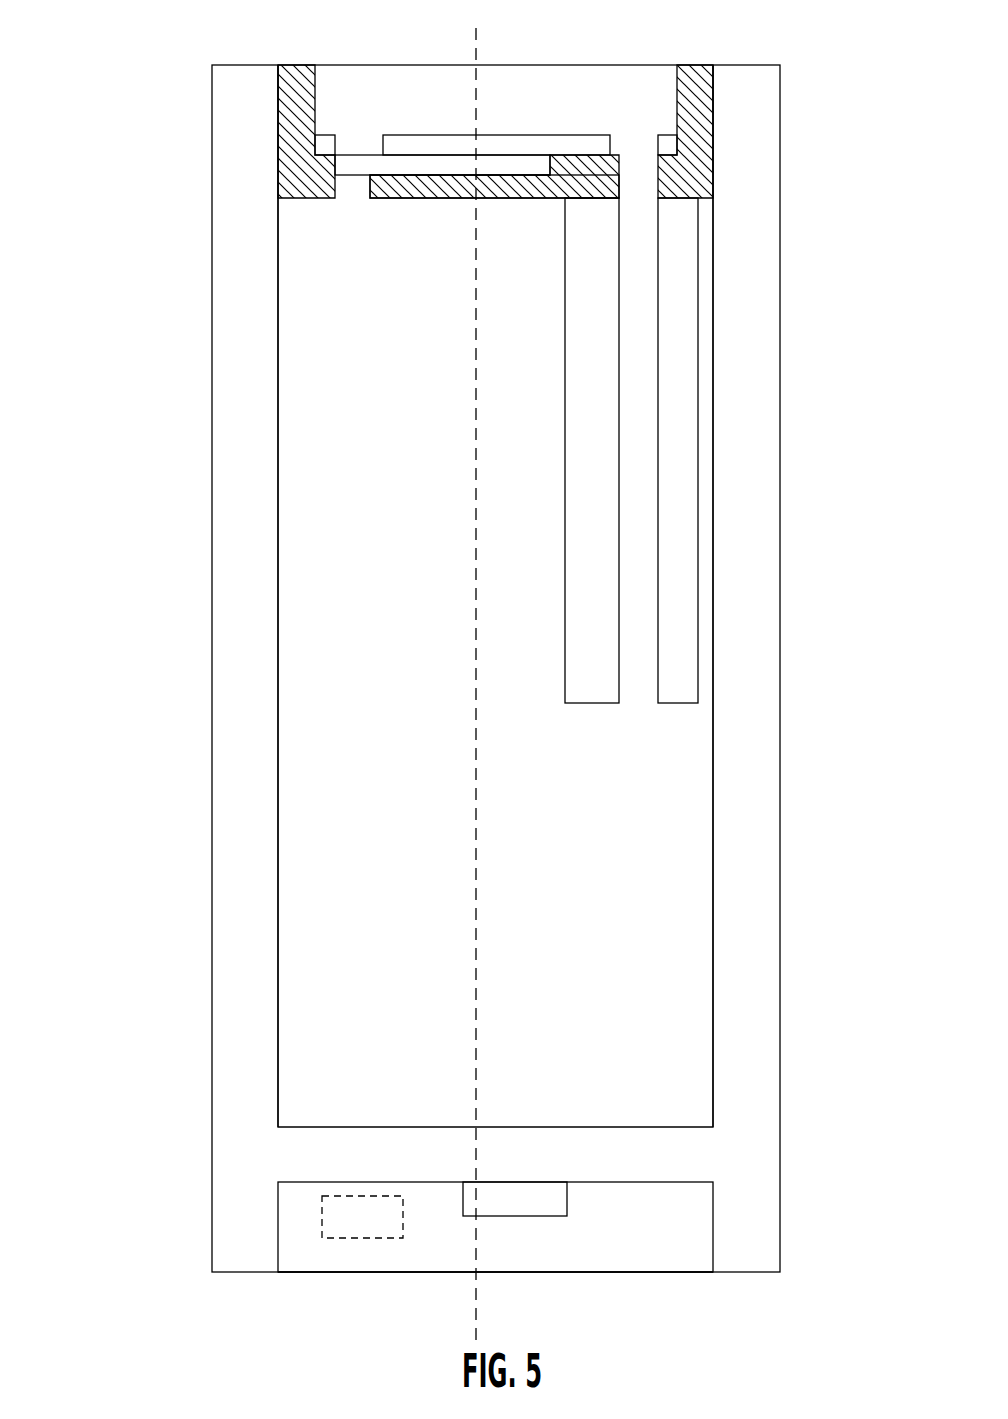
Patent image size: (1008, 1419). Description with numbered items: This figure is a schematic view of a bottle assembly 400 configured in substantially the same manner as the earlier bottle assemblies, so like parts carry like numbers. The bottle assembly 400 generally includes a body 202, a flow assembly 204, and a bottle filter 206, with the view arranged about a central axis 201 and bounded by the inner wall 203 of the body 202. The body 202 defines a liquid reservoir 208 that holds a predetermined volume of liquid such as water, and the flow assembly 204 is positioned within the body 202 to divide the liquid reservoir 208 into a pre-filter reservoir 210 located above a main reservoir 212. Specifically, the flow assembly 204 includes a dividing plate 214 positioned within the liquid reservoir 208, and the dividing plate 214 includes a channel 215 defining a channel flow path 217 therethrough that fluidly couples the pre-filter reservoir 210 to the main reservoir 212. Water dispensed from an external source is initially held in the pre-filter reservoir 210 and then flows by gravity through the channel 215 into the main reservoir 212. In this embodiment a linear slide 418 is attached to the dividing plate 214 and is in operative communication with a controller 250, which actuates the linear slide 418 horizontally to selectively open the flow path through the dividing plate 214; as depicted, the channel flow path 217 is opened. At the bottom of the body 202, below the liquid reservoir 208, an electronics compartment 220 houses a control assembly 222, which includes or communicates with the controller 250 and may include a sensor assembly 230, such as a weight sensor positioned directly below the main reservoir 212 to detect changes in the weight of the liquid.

The bottle assembly 400 is at (141, 114).
The central axis 201 is at (478, 813).
The body 202 is at (223, 708).
The inner chamber wall 203 is at (280, 877).
The flow assembly 204 is at (431, 194).
The bottle filter 206 is at (563, 480).
The liquid reservoir 208 is at (310, 583).
The pre-filter reservoir 210 is at (382, 103).
The main reservoir 212 is at (652, 977).
The dividing plate 214 is at (420, 142).
The channel 215 is at (612, 150).
The channel flow path 217 is at (634, 126).
The linear slide 418 is at (558, 163).
The electronics compartment 220 is at (355, 1251).
The control assembly 222 is at (545, 1281).
The sensor assembly 230 is at (463, 1195).
The controller 250 is at (355, 1196).